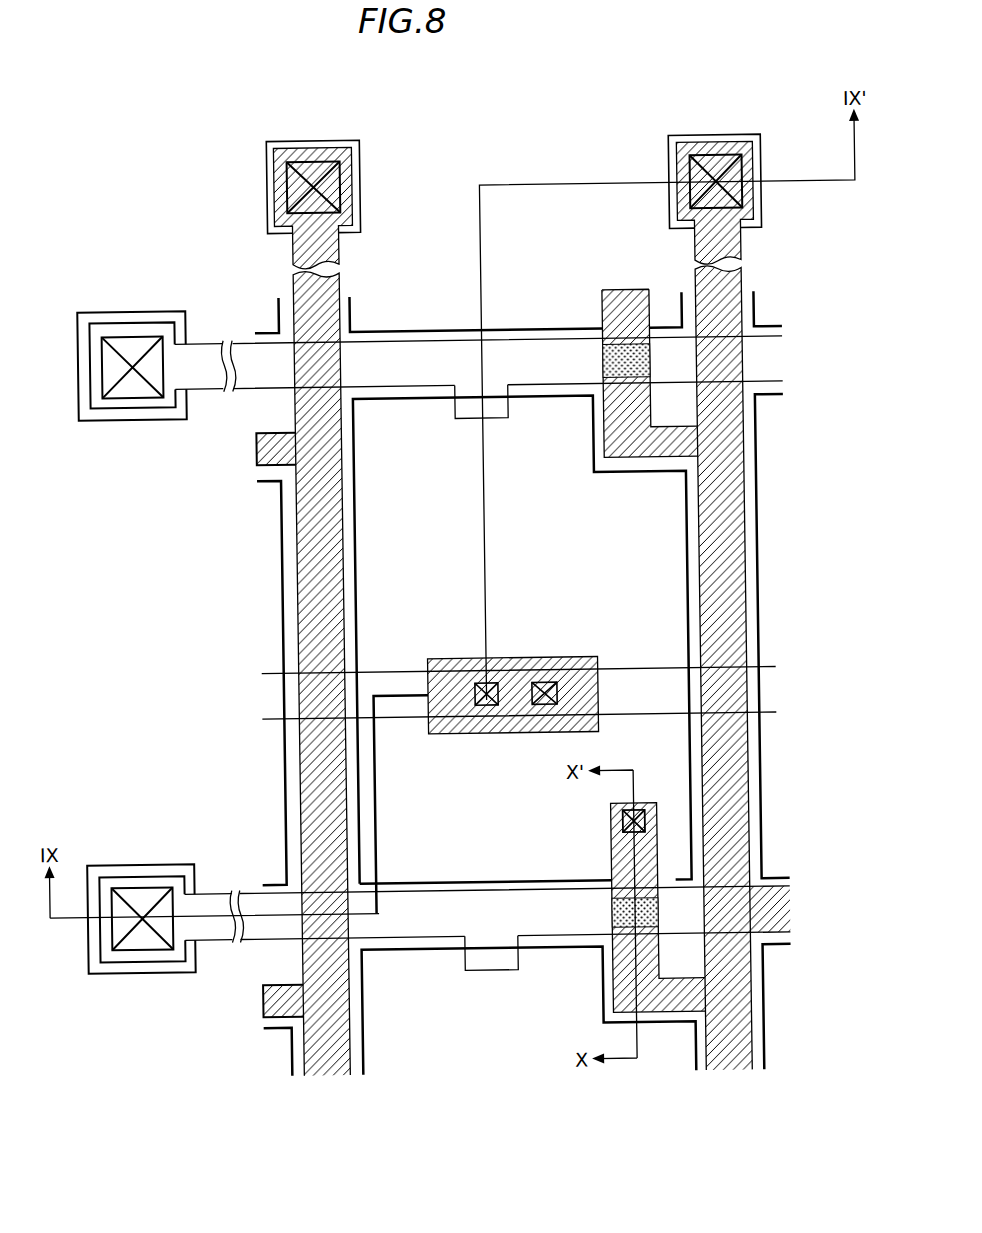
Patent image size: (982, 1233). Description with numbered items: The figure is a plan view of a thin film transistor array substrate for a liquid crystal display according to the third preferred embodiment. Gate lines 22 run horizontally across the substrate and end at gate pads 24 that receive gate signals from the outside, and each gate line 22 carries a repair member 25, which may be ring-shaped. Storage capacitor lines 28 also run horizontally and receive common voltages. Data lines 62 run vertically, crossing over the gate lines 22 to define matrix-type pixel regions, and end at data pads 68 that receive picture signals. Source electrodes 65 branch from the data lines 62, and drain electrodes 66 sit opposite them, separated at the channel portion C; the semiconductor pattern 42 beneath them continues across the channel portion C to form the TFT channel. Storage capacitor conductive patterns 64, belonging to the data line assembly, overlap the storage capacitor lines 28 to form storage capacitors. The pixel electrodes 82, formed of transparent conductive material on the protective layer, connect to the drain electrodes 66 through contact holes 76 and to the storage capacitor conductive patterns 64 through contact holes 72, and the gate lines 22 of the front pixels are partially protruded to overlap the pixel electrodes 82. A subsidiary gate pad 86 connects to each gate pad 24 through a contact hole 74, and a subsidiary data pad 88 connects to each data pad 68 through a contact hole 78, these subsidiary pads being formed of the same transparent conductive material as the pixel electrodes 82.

The gate line 22 is at (541, 386).
The gate pad 24 is at (160, 403).
The repair member 25 is at (466, 420).
The storage capacitor line 28 is at (637, 670).
The semiconductor pattern 42 is at (566, 674).
The data line 62 is at (297, 524).
The storage capacitor conductive pattern 64 is at (452, 658).
The source electrode 65 is at (608, 1010).
The drain electrode 66 is at (608, 852).
The data pad 68 is at (358, 220).
The contact hole exposing storage capacitor conductive pattern 72 is at (544, 706).
The contact hole exposing gate pad 74 is at (106, 375).
The contact hole exposing drain electrode 76 is at (620, 818).
The contact hole exposing data pad 78 is at (293, 185).
The pixel electrode 82 is at (402, 397).
The subsidiary gate pad 86 is at (120, 415).
The subsidiary data pad 88 is at (366, 176).
The channel portion C is at (608, 912).